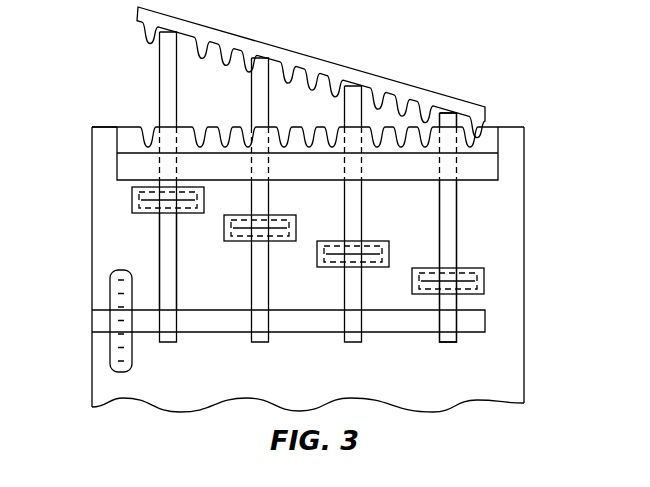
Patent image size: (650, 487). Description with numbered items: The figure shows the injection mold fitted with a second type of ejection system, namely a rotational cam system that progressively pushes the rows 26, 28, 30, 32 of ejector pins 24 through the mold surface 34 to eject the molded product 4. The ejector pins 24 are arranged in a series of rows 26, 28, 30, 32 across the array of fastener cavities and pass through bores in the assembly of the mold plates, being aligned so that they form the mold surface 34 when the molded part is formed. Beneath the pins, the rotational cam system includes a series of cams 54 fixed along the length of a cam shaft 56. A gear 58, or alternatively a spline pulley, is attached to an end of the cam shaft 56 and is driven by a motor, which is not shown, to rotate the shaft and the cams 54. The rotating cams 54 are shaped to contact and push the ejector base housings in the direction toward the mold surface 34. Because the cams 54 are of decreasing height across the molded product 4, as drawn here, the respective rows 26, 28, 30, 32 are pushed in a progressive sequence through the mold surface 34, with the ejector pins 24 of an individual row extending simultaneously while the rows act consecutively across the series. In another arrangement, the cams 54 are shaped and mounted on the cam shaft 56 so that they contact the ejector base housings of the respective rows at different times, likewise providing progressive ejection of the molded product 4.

The molded product 4 is at (470, 103).
The ejector pins 24 is at (457, 212).
The first row of ejector pins 26 is at (158, 70).
The second row of ejector pins 28 is at (250, 100).
The third row of ejector pins 30 is at (343, 204).
The fourth row of ejector pins 32 is at (437, 218).
The mold surface 34 is at (102, 126).
The cams 54 is at (160, 245).
The cam shaft 56 is at (227, 308).
The gear 58 is at (108, 287).